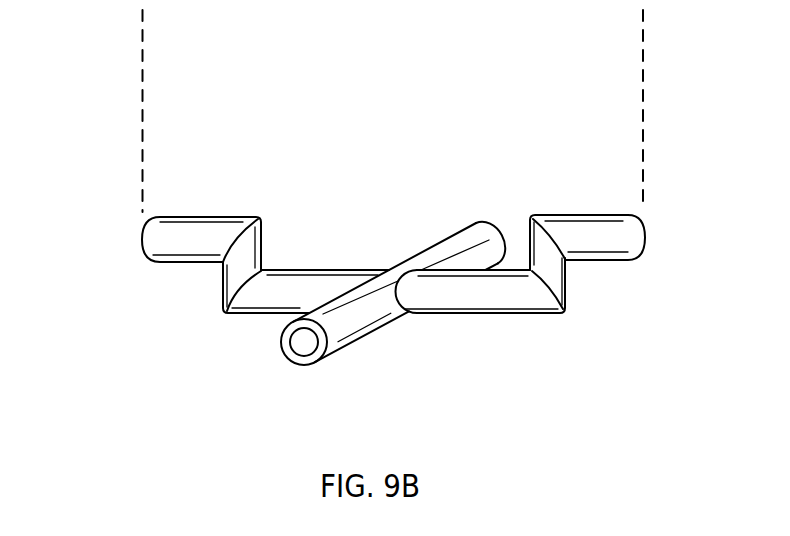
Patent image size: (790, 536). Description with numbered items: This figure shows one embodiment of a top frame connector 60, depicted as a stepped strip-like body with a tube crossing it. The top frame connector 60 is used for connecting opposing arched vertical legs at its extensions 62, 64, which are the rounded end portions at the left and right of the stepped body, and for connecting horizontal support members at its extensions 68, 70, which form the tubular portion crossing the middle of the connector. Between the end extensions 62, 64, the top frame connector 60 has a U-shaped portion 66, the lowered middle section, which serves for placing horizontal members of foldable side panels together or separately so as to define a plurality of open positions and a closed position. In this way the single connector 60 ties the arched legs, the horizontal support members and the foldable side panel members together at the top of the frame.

The top frame connector 60 is at (387, 302).
The extension 62 is at (154, 249).
The extension 64 is at (632, 243).
The U-shaped portion 66 is at (250, 313).
The extension 68 is at (393, 291).
The extension 70 is at (468, 240).